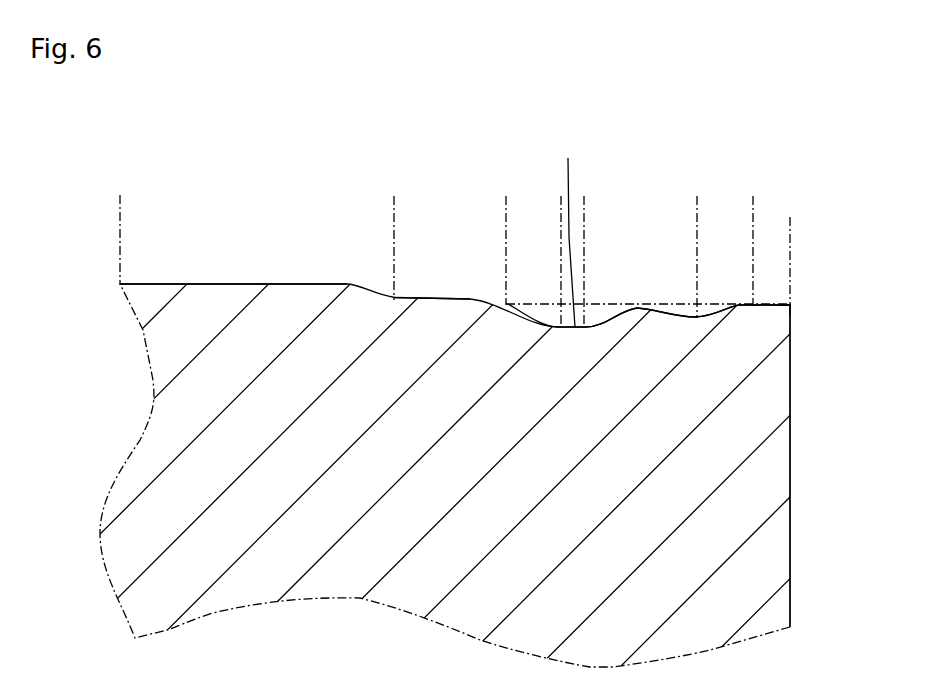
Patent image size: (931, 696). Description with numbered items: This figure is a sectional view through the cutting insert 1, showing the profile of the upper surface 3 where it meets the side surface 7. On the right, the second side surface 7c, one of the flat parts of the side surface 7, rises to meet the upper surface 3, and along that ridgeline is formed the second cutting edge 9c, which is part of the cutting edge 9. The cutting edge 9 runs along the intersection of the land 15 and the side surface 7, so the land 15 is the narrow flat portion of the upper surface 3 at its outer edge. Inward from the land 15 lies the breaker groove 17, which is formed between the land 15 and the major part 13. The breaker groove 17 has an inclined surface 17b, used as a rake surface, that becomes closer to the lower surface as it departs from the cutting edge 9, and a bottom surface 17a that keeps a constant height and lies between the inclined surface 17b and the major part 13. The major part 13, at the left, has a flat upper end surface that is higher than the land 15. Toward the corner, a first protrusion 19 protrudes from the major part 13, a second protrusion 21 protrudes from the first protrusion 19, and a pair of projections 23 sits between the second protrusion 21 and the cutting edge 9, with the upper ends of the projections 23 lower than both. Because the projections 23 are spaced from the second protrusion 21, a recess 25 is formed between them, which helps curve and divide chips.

The cutting insert 1 is at (211, 152).
The upper surface 3 is at (484, 229).
The major part 13 is at (121, 241).
The land 15 is at (754, 232).
The breaker groove 17 is at (659, 225).
The bottom surface 17a is at (530, 244).
The inclined surface 17b is at (698, 259).
The first protrusion 19 is at (395, 272).
The second protrusion 21 is at (560, 217).
The projections 23 is at (585, 274).
The recess 25 is at (570, 230).
The side surface 7 is at (831, 466).
The second side surface 7c is at (792, 443).
The cutting edge 9 is at (691, 274).
The second cutting edge 9c is at (792, 303).